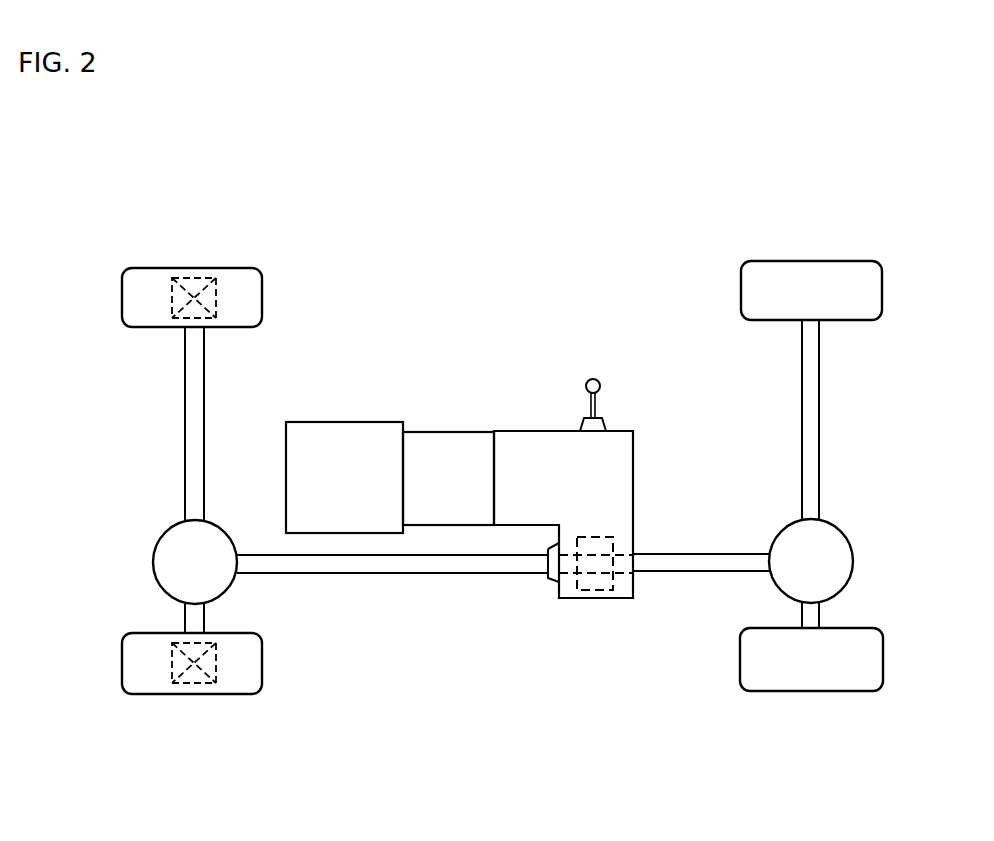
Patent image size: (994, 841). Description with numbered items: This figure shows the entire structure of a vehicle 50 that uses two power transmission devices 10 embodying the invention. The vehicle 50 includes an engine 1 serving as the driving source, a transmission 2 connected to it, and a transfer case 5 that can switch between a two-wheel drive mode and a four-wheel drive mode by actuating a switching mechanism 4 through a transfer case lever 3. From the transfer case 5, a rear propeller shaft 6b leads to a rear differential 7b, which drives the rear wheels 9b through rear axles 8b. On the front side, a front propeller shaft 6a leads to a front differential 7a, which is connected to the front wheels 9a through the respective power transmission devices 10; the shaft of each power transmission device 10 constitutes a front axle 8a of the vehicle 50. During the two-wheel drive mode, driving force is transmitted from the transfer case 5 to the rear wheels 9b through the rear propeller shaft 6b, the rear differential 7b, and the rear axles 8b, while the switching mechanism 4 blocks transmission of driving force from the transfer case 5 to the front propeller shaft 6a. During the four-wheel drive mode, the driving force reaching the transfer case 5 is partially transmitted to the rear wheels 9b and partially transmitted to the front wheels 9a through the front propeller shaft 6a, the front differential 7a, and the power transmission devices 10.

The engine 1 is at (339, 432).
The transmission 2 is at (443, 445).
The transfer case lever 3 is at (600, 378).
The switching mechanism 4 is at (595, 591).
The transfer case 5 is at (620, 480).
The front propeller shaft 6a is at (448, 574).
The rear propeller shaft 6b is at (690, 572).
The front differential 7a is at (165, 563).
The rear differential 7b is at (838, 548).
The front axle 8a is at (190, 437).
The rear axles 8b is at (815, 394).
The front wheels 9a is at (253, 299).
The rear wheels 9b is at (826, 276).
The power transmission device 10 is at (193, 282).
The vehicle 50 is at (543, 313).